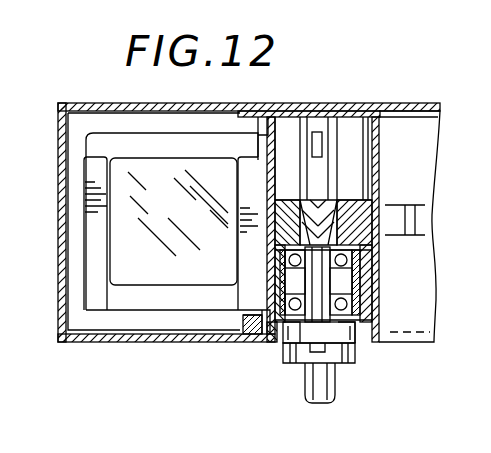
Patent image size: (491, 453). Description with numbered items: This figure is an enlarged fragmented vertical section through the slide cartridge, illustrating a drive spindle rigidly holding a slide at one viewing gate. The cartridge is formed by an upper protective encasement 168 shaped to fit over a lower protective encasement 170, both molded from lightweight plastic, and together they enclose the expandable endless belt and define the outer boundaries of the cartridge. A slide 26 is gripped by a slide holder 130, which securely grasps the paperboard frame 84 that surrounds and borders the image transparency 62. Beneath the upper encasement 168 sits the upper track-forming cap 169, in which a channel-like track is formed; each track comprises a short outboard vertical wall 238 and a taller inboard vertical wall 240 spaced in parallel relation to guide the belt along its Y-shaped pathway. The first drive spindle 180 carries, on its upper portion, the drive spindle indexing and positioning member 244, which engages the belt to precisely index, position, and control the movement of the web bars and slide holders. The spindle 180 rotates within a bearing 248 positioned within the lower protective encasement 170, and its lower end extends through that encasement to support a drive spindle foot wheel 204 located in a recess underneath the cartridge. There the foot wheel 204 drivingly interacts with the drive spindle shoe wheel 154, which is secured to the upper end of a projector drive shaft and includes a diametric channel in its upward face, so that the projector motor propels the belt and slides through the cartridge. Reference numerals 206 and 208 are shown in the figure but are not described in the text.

The upper protective encasement 168 is at (101, 103).
The lower protective encasement 170 is at (151, 342).
The paperboard frame 84 is at (137, 147).
The slide 26 is at (170, 133).
The slide holder 130 is at (253, 160).
The upper track-forming cap 169 is at (325, 113).
The image transparency 62 is at (182, 215).
The first drive spindle 180 is at (323, 205).
The drive spindle indexing and positioning member 244 is at (385, 197).
The bearing 248 is at (350, 265).
The drive spindle foot wheel 204 is at (356, 305).
The short outboard vertical wall 238 is at (242, 318).
The taller inboard vertical wall 240 is at (276, 338).
The drive spindle shoe wheel 154 is at (302, 358).
The flange 206 is at (347, 362).
The plug 208 is at (326, 397).